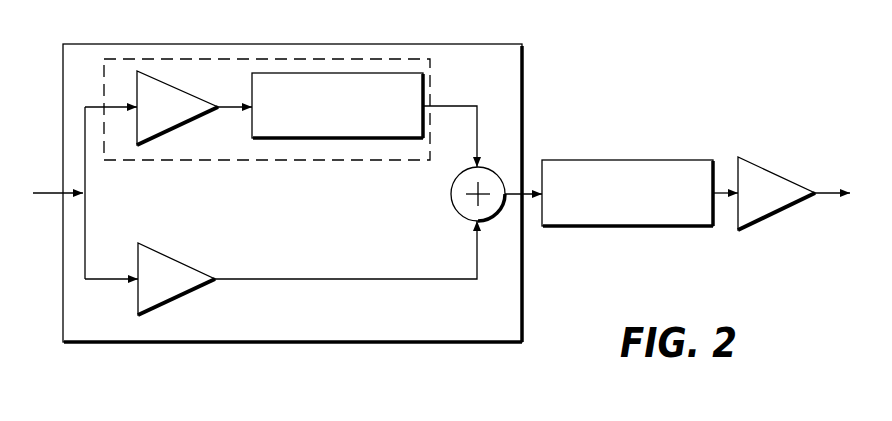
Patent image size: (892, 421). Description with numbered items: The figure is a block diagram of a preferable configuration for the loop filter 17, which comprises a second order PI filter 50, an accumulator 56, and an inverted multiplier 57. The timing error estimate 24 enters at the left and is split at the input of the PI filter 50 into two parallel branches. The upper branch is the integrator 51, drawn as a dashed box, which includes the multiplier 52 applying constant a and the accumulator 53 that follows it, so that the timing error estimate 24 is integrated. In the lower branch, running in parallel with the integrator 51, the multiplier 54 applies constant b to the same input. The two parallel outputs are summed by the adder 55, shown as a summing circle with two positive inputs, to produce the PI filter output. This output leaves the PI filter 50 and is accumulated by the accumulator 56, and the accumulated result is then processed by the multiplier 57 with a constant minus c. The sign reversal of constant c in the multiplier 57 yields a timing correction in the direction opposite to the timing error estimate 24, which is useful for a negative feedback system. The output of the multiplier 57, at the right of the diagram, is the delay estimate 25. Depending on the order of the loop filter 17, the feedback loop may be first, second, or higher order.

The loop filter 17 is at (123, 19).
The timing error estimate 24 is at (45, 188).
The delay estimate 25 is at (825, 200).
The second order PI filter 50 is at (455, 44).
The integrator 51 is at (168, 163).
The multiplier 52 is at (178, 126).
The accumulator 53 is at (308, 138).
The multiplier 54 is at (185, 293).
The adder 55 is at (452, 206).
The accumulator 56 is at (590, 227).
The inverted multiplier 57 is at (790, 181).